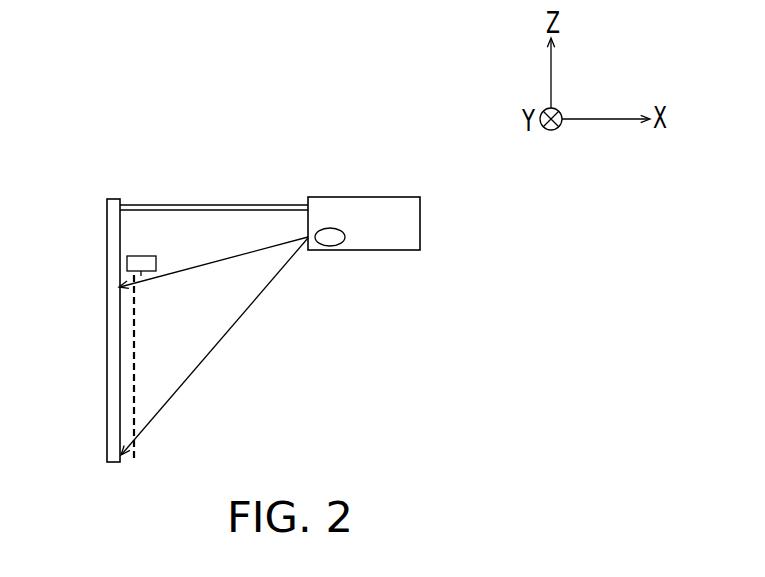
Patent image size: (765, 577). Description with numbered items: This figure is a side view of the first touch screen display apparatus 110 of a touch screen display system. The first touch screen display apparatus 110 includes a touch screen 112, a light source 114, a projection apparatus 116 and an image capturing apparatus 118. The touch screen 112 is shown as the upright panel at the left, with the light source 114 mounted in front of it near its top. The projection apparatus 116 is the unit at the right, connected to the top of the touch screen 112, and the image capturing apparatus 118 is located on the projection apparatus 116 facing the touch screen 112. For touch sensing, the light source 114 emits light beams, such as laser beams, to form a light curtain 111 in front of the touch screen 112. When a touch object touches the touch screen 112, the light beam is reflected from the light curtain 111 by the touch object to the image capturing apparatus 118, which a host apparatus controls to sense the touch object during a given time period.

The first touch screen display apparatus 110 is at (501, 438).
The light curtain 111 is at (136, 335).
The touch screen 112 is at (108, 370).
The light source 114 is at (144, 256).
The projection apparatus 116 is at (365, 197).
The image capturing apparatus 118 is at (331, 253).